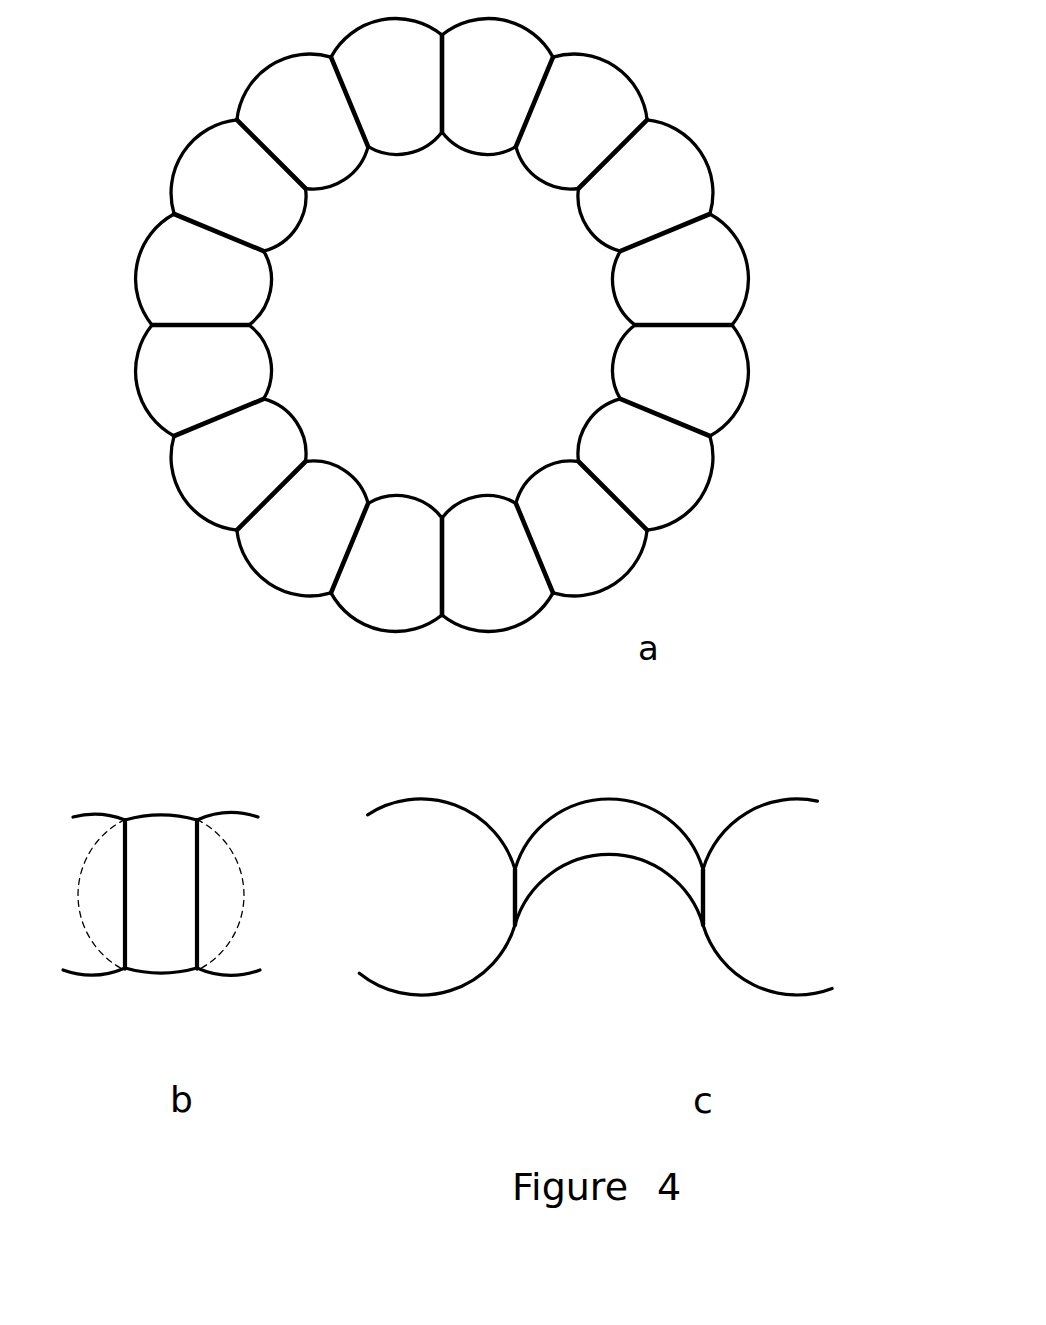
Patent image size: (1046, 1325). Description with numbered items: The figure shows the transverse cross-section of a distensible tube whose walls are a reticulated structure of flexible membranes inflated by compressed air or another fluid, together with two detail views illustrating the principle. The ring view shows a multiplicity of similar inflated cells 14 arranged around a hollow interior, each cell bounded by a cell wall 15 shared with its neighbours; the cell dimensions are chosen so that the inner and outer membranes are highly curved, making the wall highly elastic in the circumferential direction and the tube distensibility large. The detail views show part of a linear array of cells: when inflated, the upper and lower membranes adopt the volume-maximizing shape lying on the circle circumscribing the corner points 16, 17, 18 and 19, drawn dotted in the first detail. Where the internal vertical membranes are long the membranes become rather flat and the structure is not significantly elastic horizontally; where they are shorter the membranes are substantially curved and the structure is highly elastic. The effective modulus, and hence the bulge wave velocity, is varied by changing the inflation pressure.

The cell 14 is at (263, 548).
The cell wall 15 is at (347, 622).
The corner point 16 is at (515, 867).
The corner point 17 is at (702, 867).
The corner point 18 is at (515, 920).
The corner point 19 is at (702, 922).